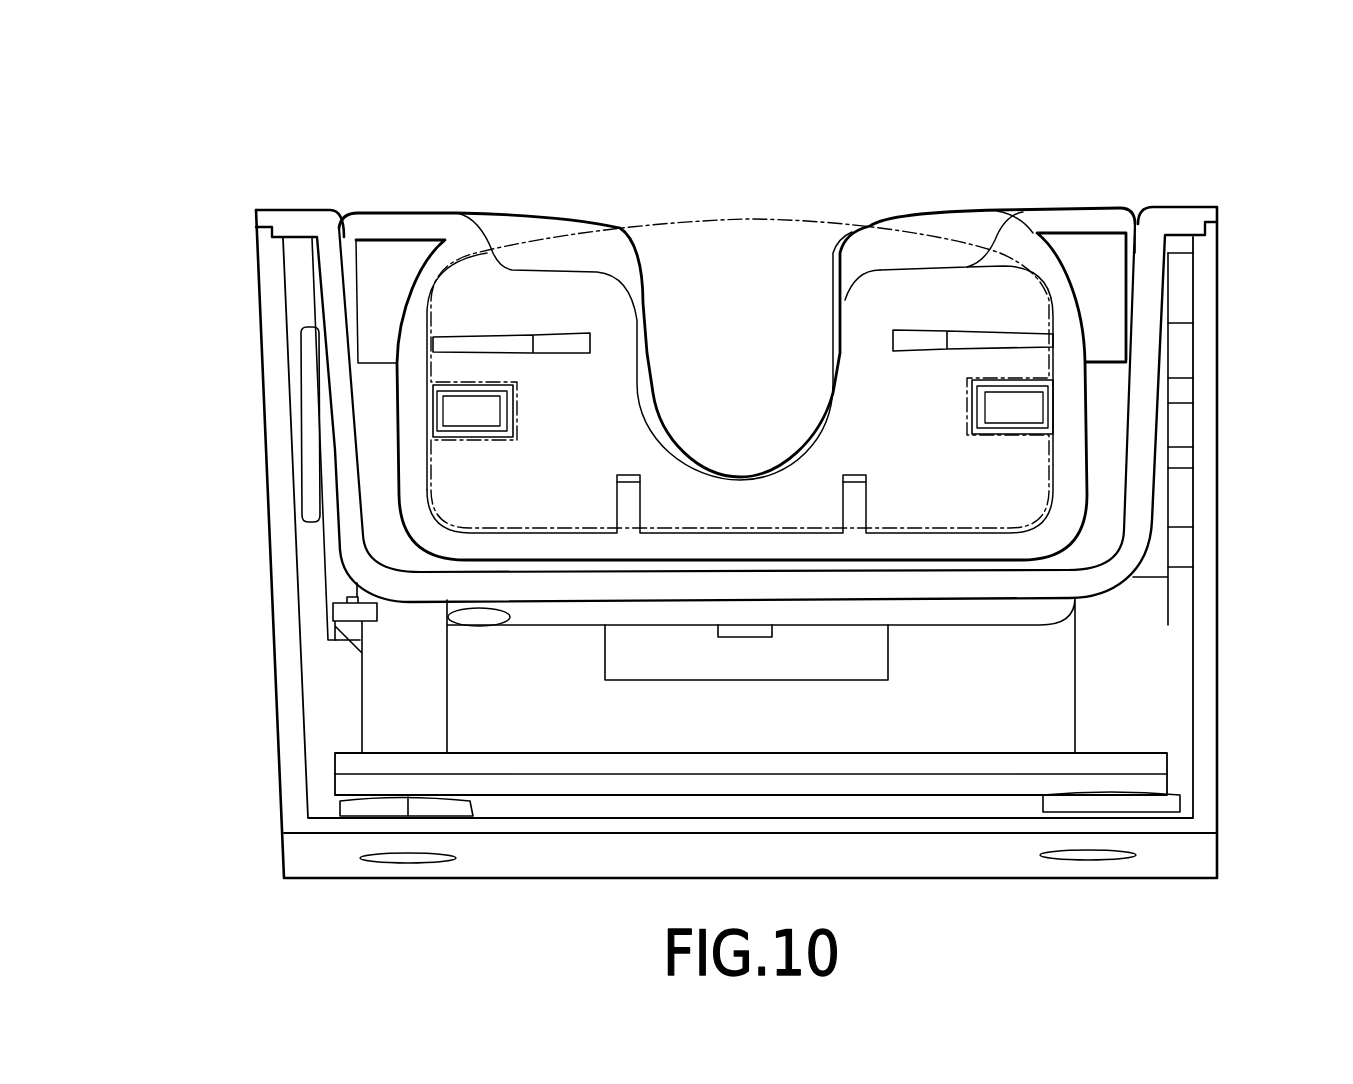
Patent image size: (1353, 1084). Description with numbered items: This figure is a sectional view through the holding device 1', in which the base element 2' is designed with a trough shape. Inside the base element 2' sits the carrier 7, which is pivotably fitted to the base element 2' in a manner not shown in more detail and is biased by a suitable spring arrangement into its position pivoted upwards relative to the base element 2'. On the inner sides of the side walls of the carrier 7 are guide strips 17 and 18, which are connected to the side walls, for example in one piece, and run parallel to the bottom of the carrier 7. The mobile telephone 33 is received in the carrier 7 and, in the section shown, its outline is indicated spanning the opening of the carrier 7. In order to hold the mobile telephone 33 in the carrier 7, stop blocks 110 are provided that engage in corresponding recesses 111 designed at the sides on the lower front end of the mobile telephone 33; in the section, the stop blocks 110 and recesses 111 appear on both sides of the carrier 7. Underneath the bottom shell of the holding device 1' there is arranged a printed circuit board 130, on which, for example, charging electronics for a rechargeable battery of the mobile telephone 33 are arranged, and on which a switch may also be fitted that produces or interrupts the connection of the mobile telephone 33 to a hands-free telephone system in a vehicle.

The holding device 1' is at (701, 486).
The base element 2' is at (758, 400).
The carrier 7 is at (422, 205).
The mobile telephone 33 is at (757, 220).
The guide strip 17 is at (977, 343).
The guide strip 18 is at (517, 345).
The stop block 110 is at (453, 402).
The recess 111 is at (453, 425).
The printed circuit board 130 is at (952, 757).